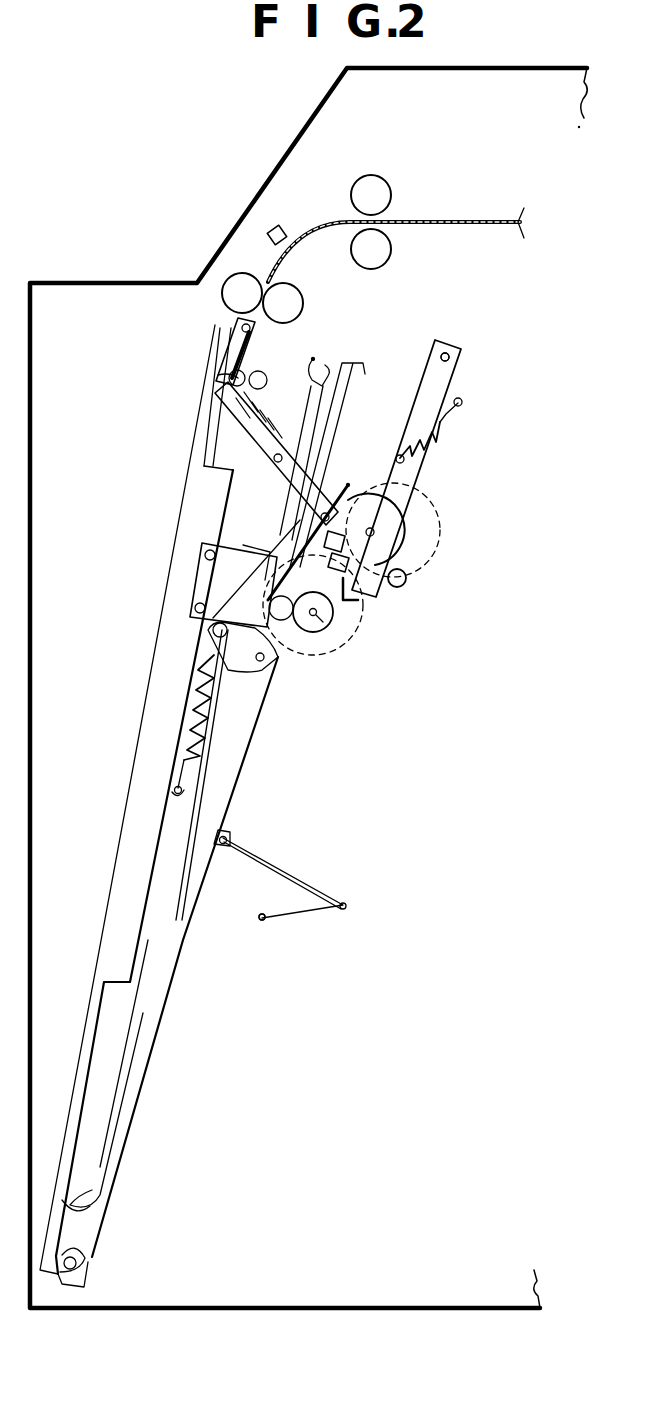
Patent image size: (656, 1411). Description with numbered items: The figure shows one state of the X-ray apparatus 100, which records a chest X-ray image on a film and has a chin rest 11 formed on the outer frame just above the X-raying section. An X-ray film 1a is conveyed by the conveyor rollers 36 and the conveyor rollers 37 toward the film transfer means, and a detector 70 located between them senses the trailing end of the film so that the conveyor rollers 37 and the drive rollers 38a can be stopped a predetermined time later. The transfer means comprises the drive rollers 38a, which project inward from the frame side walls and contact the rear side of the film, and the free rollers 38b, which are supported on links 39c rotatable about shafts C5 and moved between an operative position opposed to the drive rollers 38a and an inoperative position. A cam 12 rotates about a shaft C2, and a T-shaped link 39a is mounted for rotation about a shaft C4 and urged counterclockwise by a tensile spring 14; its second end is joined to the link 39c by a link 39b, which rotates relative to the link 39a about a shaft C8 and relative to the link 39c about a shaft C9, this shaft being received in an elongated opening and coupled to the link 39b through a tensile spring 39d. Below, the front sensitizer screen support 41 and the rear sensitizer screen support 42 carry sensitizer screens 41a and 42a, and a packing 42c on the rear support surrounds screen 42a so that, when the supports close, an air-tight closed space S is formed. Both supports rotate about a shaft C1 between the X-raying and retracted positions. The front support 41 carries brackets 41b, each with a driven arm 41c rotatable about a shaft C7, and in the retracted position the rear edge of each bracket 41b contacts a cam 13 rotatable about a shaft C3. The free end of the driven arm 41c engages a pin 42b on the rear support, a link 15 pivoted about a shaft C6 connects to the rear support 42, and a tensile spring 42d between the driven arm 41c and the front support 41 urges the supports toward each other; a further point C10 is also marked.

The X-ray apparatus 100 is at (252, 172).
The chin rest 11 is at (152, 278).
The X-ray film 1a is at (460, 217).
The conveyor rollers 36 is at (373, 188).
The detector 70 is at (272, 230).
The conveyor rollers 37 is at (243, 281).
The drive rollers 38a is at (306, 345).
The free rollers 38b is at (215, 382).
The T-shaped link 39a is at (460, 372).
The link 39b is at (335, 410).
The link 39c is at (235, 350).
The tensile spring 39d is at (212, 436).
The front sensitizer screen support 41 is at (125, 802).
The sensitizer screen 41a is at (110, 1000).
The bracket 41b is at (200, 568).
The driven arm 41c is at (258, 580).
The rear sensitizer screen support 42 is at (192, 880).
The sensitizer screen 42a is at (190, 826).
The pin 42b is at (380, 590).
The packing 42c is at (327, 372).
The tensile spring 42d is at (215, 730).
The cam 12 is at (402, 584).
The cam 13 is at (290, 630).
The tensile spring 14 is at (440, 435).
The link 15 is at (332, 890).
The closed space S is at (95, 1102).
The shaft C1 is at (80, 1265).
The shaft C2 is at (375, 533).
The shaft C3 is at (326, 640).
The shaft C4 is at (448, 350).
The shaft C5 is at (272, 360).
The shaft C6 is at (263, 920).
The shaft C7 is at (280, 660).
The shaft C8 is at (355, 485).
The shaft C9 is at (228, 395).
The spring anchor C10 is at (462, 404).